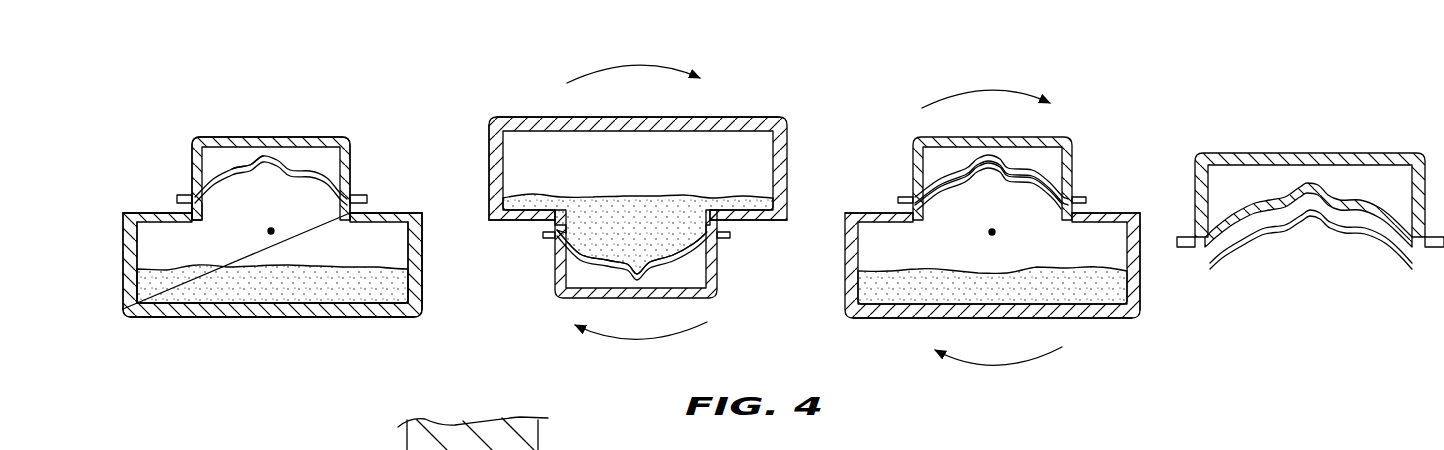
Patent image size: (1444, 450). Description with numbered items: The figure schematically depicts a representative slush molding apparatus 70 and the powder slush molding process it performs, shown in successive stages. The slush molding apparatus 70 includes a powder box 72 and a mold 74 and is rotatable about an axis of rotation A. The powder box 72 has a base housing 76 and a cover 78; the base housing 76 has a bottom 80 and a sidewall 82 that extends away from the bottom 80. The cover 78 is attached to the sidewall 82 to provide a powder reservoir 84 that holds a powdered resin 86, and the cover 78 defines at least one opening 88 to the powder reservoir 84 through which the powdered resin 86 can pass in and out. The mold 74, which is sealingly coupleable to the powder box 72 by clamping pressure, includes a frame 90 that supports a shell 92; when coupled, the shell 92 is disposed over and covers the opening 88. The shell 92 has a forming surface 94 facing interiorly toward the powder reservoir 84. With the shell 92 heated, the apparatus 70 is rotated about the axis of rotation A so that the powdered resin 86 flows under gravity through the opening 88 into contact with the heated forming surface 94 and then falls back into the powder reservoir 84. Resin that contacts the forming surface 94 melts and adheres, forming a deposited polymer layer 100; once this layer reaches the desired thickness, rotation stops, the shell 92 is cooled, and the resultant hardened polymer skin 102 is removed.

The slush molding apparatus 70 is at (183, 113).
The powder box 72 is at (120, 273).
The mold 74 is at (377, 138).
The base housing 76 is at (127, 243).
The cover 78 is at (170, 212).
The bottom 80 is at (297, 308).
The sidewall 82 is at (415, 240).
The powder reservoir 84 is at (345, 255).
The powdered resin 86 is at (228, 283).
The opening 88 is at (203, 203).
The frame 90 is at (217, 136).
The shell 92 is at (328, 188).
The forming surface 94 is at (235, 175).
The deposited polymer layer 100 is at (975, 181).
The hardened polymer skin 102 is at (1273, 226).
The axis of rotation A is at (275, 231).